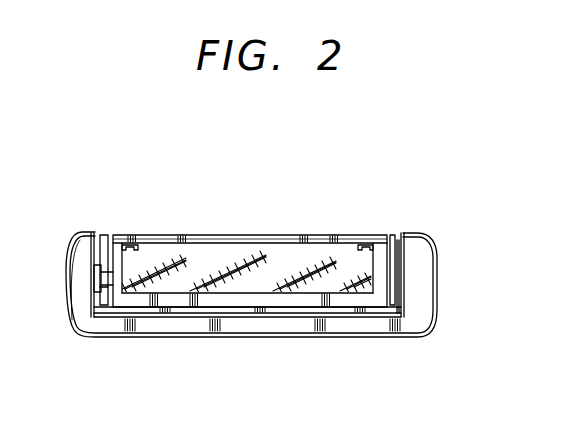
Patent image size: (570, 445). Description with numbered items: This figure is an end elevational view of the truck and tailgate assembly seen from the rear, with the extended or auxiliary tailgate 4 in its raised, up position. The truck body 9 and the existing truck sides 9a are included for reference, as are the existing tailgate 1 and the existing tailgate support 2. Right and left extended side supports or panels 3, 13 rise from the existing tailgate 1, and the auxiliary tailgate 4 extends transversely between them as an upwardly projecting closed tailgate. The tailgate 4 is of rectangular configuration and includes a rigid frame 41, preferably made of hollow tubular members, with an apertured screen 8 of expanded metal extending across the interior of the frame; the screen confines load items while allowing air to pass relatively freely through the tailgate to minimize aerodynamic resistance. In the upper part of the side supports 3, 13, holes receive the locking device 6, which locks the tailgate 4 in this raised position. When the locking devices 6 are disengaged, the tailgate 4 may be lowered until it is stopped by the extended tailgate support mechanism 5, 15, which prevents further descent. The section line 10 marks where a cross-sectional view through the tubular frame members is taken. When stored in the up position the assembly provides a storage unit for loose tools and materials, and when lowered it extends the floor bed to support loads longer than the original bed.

The existing tailgate 1 is at (306, 318).
The existing tailgate support 2 is at (97, 294).
The right extended side support 3 is at (104, 236).
The extended or auxiliary tailgate 4 is at (174, 237).
The rigid frame 41 is at (229, 238).
The extended tailgate support mechanism 5 is at (108, 280).
The locking device 6 is at (128, 246).
The apertured screen 8 is at (296, 258).
The truck body 9 is at (62, 320).
The existing truck sides 9a is at (84, 232).
The section line 10 is at (318, 167).
The left extended side support 13 is at (396, 240).
The extended tailgate support mechanism 15 is at (400, 273).